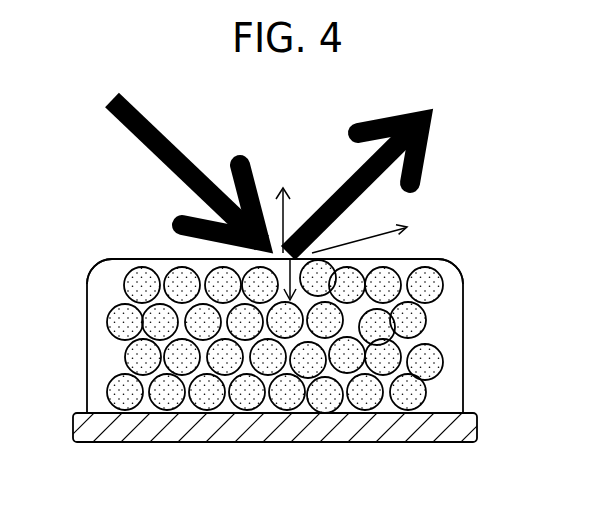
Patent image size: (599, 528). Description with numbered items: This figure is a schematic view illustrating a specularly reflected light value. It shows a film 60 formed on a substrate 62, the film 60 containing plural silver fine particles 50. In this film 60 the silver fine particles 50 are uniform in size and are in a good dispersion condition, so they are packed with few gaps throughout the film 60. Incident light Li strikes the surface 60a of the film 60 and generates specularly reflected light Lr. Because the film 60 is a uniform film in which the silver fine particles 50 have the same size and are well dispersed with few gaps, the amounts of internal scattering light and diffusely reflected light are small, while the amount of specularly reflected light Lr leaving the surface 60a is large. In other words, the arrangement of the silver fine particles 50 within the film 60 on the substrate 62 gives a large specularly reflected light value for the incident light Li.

The silver fine particles 50 is at (425, 282).
The film 60 is at (100, 345).
The surface of the film 60a is at (140, 259).
The substrate 62 is at (443, 428).
The incident light Li is at (162, 134).
The specularly reflected light Lr is at (348, 179).